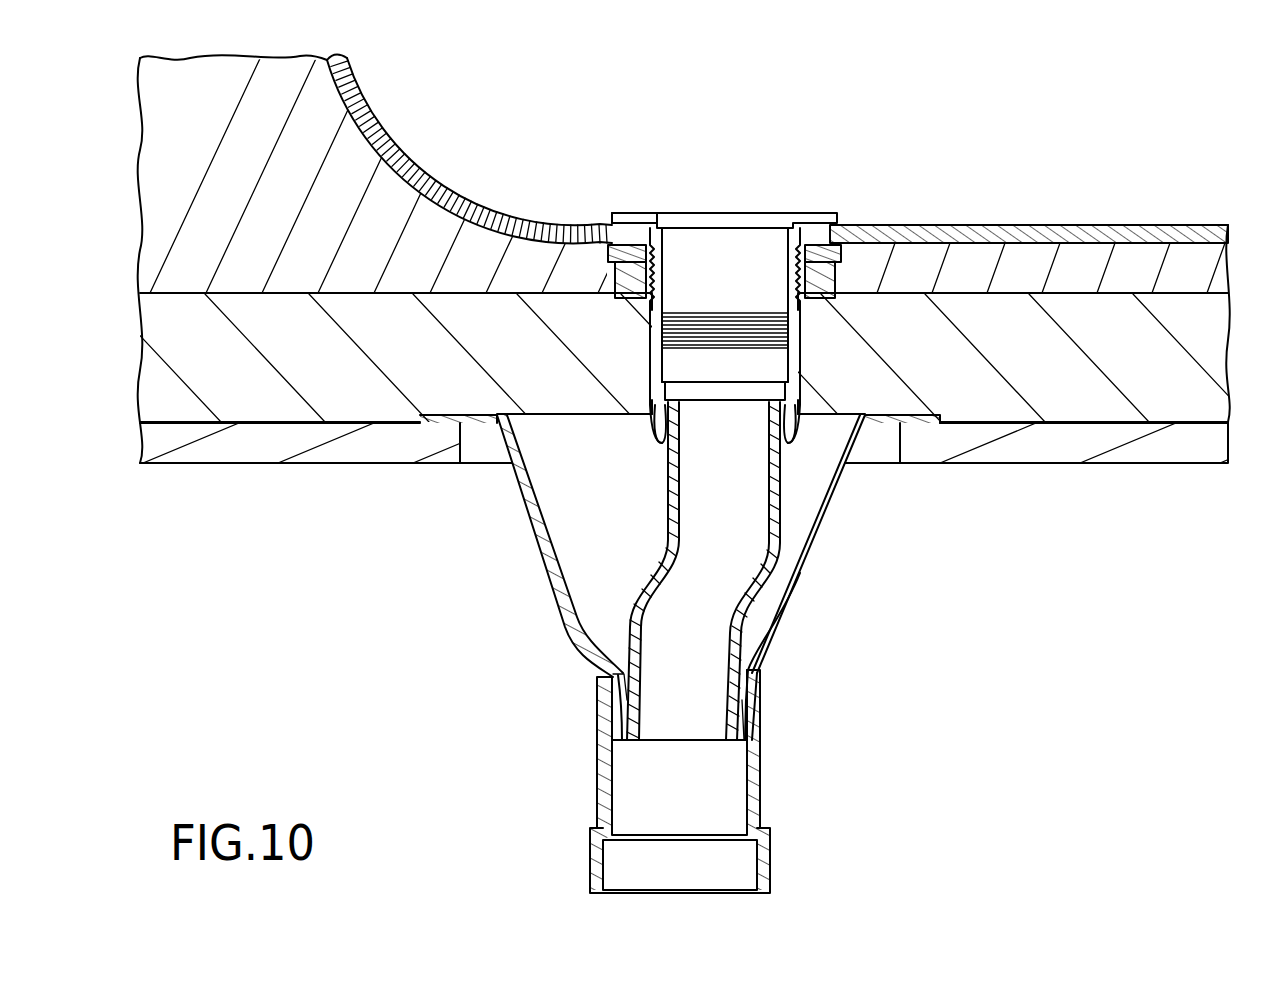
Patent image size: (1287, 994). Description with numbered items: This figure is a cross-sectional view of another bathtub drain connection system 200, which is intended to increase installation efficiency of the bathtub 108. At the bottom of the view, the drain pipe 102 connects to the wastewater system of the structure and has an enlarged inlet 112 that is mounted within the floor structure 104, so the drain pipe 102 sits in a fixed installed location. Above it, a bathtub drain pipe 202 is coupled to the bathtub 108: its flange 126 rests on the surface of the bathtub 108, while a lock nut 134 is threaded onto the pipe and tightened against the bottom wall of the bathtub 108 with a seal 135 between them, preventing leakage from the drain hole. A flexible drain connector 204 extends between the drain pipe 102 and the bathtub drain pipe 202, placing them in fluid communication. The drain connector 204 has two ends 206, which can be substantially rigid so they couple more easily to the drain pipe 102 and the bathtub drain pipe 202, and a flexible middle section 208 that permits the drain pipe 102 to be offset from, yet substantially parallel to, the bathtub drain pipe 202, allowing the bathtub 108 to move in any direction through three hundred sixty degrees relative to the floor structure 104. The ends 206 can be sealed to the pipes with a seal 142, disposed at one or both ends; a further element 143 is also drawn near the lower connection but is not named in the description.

The bathtub drain connection system 200 is at (1147, 181).
The drain pipe 102 is at (603, 765).
The floor structure 104 is at (1118, 463).
The bathtub 108 is at (993, 225).
The enlarged inlet 112 is at (508, 481).
The flange 126 is at (620, 213).
The lock nut 134 is at (627, 298).
The seal 135 is at (607, 256).
The seal 142 is at (740, 718).
The lower seal 143 is at (620, 673).
The bathtub drain pipe 202 is at (680, 218).
The drain connector 204 is at (768, 560).
The ends 206 is at (783, 427).
The middle section 208 is at (668, 533).